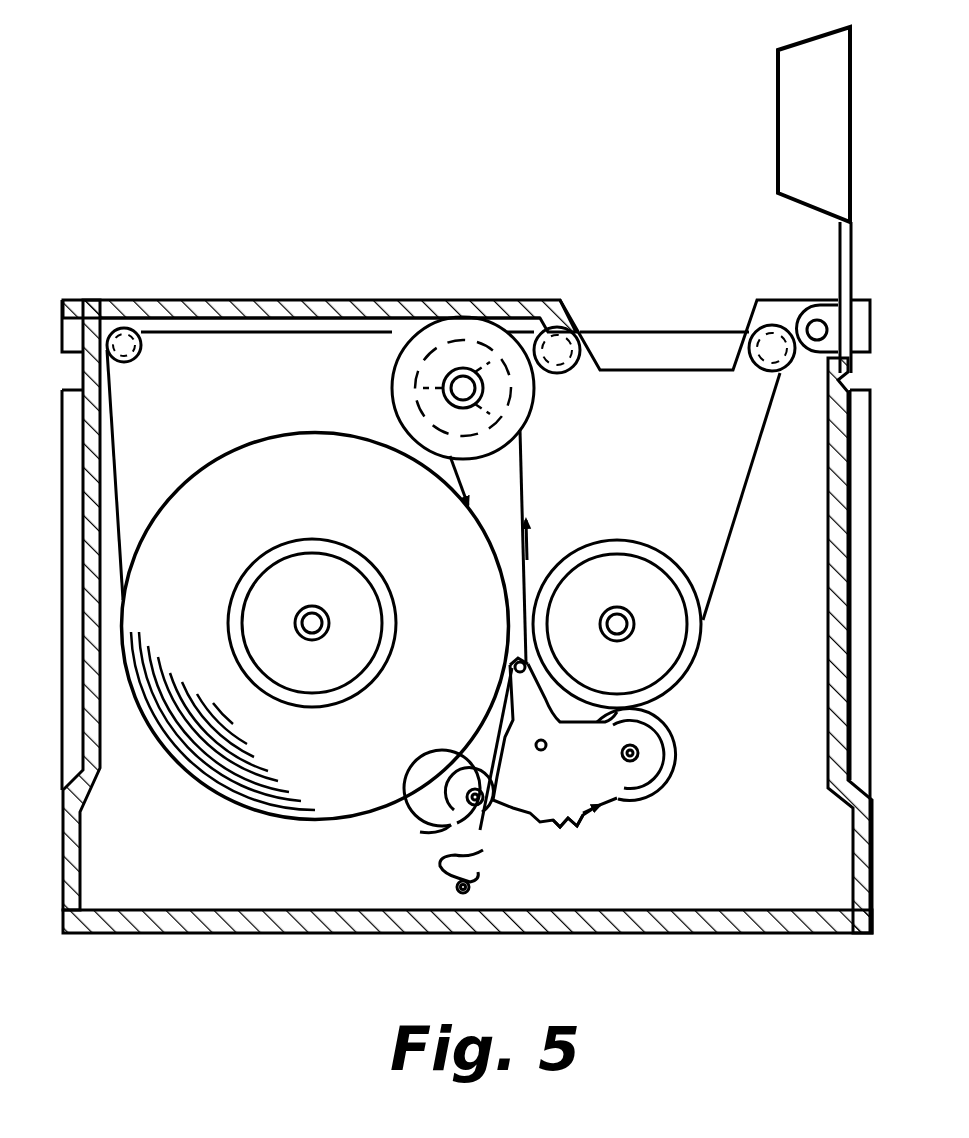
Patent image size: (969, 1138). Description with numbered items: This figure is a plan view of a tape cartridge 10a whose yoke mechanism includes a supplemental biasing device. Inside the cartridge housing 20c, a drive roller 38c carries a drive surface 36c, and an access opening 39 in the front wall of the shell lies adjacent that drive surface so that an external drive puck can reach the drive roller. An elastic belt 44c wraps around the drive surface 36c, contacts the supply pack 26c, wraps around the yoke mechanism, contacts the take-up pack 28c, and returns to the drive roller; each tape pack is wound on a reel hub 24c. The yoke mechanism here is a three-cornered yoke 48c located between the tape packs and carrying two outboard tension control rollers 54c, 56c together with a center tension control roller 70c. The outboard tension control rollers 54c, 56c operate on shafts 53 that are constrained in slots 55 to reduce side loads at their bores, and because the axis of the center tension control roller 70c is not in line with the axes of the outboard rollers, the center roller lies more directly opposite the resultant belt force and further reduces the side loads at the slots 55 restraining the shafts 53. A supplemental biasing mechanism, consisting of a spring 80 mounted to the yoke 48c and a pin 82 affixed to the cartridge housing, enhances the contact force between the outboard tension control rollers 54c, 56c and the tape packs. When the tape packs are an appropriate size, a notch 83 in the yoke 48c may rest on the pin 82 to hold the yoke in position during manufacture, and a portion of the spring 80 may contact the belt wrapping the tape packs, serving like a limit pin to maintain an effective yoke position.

The cartridge 10a is at (440, 240).
The access opening 39 is at (510, 300).
The cartridge housing 20c is at (320, 878).
The drive surface 36c is at (395, 405).
The drive roller 38c is at (522, 400).
The supply pack 26c is at (212, 475).
The elastic belt 44c is at (529, 492).
The reel hub 24c is at (341, 678).
The take-up pack 28c is at (700, 660).
The center tension control roller 70c is at (508, 703).
The three-cornered yoke 48c is at (485, 780).
The slots 55 is at (433, 782).
The outboard tension control roller 54c is at (420, 832).
The outboard tension control roller 56c is at (652, 783).
The shafts 53 is at (640, 755).
The notch 83 is at (578, 825).
The spring 80 is at (437, 880).
The pin 82 is at (447, 888).